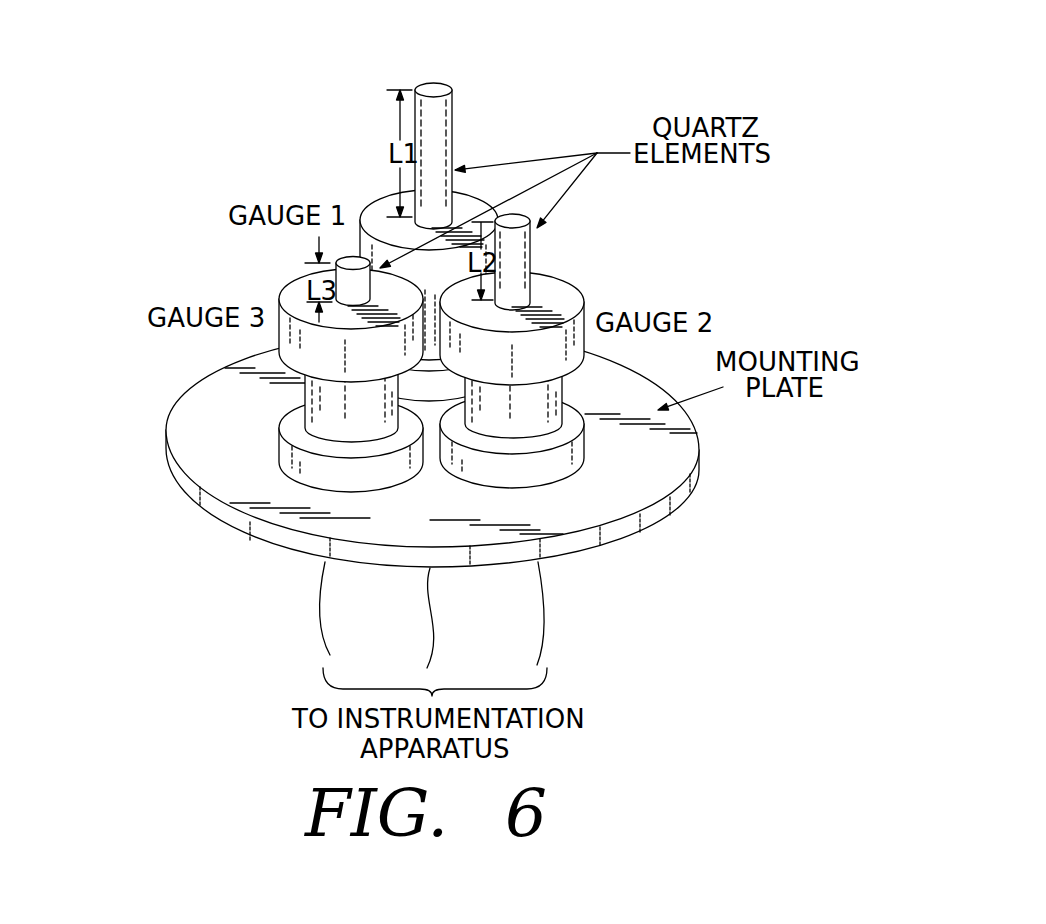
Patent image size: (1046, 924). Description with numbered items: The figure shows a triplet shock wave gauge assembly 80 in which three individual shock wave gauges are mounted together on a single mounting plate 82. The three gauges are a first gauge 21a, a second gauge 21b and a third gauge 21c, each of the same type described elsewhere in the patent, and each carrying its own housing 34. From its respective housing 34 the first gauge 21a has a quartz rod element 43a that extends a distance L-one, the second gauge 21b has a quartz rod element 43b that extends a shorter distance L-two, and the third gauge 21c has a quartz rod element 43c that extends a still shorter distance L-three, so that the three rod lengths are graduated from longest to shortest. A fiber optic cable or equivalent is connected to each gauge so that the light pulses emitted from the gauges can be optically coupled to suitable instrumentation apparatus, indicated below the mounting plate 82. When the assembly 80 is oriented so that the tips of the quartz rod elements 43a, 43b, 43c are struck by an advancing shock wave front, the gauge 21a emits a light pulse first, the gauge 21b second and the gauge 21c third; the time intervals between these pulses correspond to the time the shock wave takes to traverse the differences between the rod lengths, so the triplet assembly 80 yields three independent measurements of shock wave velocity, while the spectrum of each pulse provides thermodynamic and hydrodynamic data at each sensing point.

The triplet shock wave gauge assembly 80 is at (173, 173).
The mounting plate 82 is at (185, 394).
The first gauge 21a is at (380, 199).
The second gauge 21b is at (568, 300).
The third gauge 21c is at (295, 291).
The quartz rod element 43a is at (453, 100).
The quartz rod element 43b is at (531, 266).
The quartz rod element 43c is at (350, 300).
The housing 34 is at (328, 402).